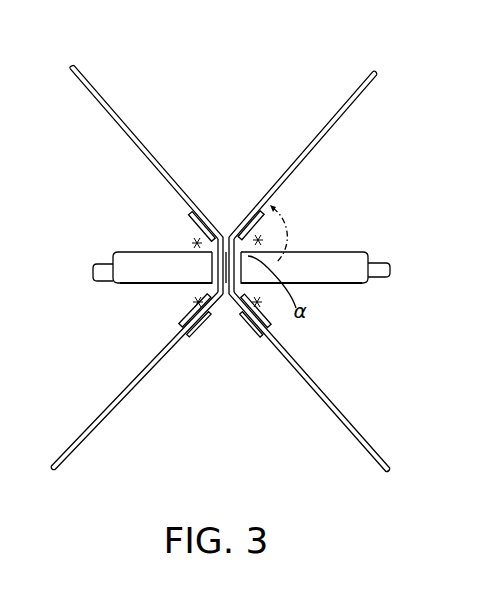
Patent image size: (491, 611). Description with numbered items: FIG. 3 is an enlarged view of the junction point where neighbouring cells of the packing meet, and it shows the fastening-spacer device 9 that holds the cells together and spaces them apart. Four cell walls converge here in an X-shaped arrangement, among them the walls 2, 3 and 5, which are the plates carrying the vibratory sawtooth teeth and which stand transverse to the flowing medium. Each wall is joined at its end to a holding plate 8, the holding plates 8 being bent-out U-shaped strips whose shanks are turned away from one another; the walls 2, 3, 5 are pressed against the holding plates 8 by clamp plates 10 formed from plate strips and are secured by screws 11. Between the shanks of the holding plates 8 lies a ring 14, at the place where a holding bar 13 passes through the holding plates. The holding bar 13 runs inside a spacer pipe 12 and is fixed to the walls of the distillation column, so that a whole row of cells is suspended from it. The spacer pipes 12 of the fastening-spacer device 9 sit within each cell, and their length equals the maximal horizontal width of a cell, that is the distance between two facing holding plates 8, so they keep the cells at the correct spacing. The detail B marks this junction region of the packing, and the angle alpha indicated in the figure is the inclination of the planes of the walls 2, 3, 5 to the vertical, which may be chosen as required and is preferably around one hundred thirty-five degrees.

The cell wall 2 is at (112, 106).
The cell wall 3 is at (128, 387).
The cell wall 5 is at (319, 134).
The holding plate 8 is at (197, 246).
The fastening-spacer device 9 is at (127, 252).
The clamp plate 10 is at (213, 221).
The screw 11 is at (225, 221).
The spacer pipe 12 is at (347, 268).
The holding bar 13 is at (97, 266).
The ring 14 is at (248, 274).
The assembly B is at (167, 106).